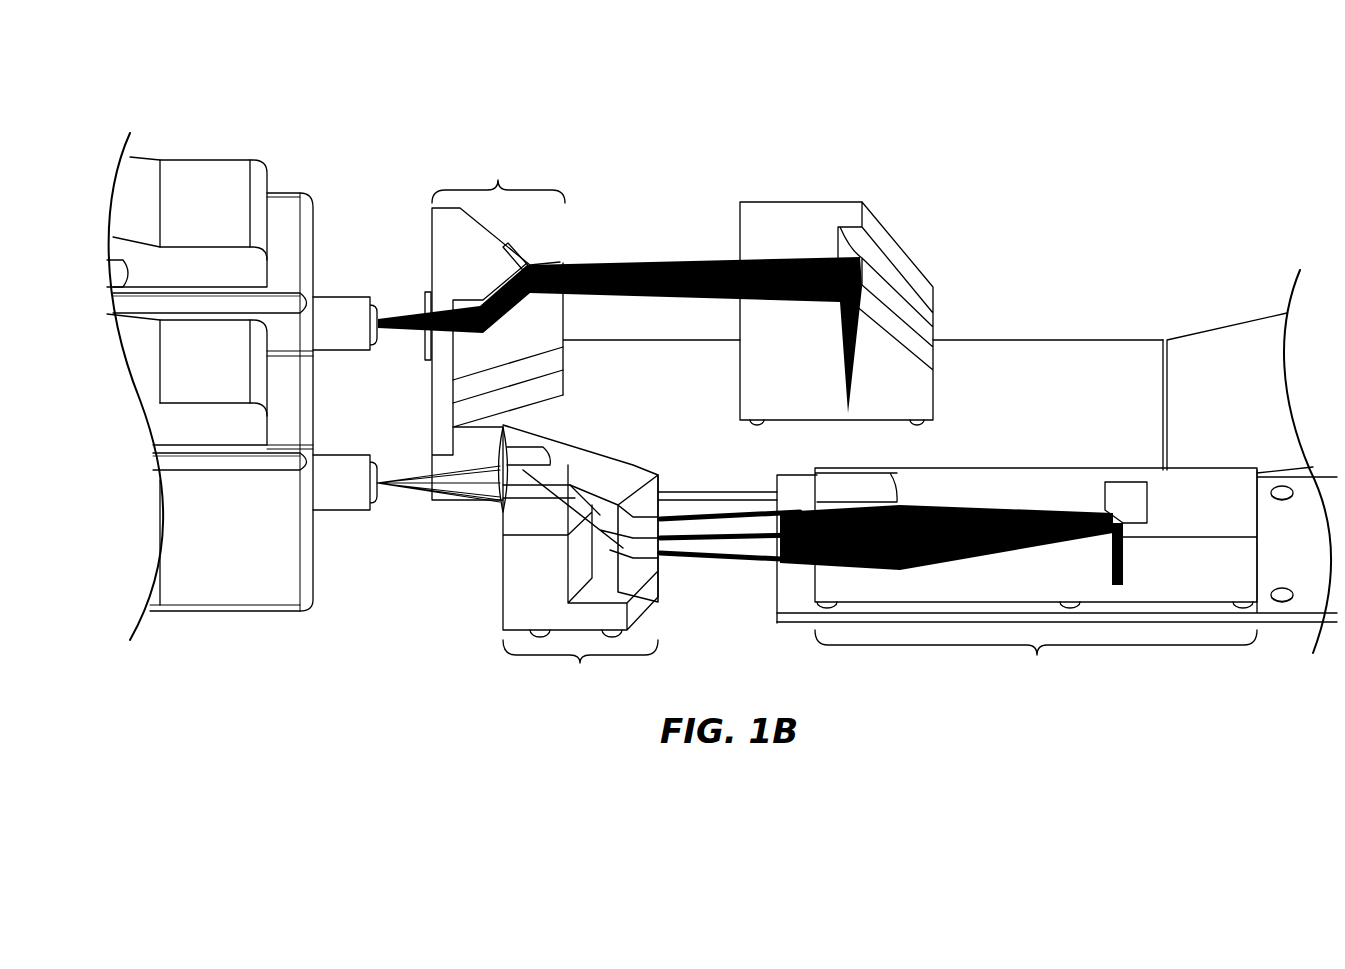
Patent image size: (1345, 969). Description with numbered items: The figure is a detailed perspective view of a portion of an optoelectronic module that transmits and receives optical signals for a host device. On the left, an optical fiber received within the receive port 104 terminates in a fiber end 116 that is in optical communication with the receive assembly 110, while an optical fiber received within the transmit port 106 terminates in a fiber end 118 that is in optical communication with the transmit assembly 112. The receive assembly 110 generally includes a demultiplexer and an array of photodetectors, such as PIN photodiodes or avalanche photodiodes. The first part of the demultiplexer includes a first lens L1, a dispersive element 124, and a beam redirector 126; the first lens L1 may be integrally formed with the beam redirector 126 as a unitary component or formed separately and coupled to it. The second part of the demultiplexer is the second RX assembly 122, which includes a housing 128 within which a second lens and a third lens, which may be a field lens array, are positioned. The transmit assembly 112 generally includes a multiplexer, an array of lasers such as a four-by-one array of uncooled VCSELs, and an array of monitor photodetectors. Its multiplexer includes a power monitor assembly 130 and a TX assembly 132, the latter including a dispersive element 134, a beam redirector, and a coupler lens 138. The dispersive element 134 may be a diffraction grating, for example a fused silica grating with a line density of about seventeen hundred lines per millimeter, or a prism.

The receive port 104 is at (253, 629).
The transmit port 106 is at (210, 146).
The receive assembly 110 is at (457, 587).
The transmit assembly 112 is at (425, 227).
The fiber end 116 is at (333, 505).
The fiber end 118 is at (333, 346).
The second RX assembly 122 is at (1057, 479).
The dispersive element 124 is at (665, 482).
The beam redirector 126 is at (503, 606).
The housing 128 is at (995, 477).
The power monitor assembly 130 is at (792, 201).
The TX assembly 132 is at (545, 424).
The dispersive element 134 is at (523, 251).
The coupler lens 138 is at (432, 313).
The first lens L1 is at (530, 430).